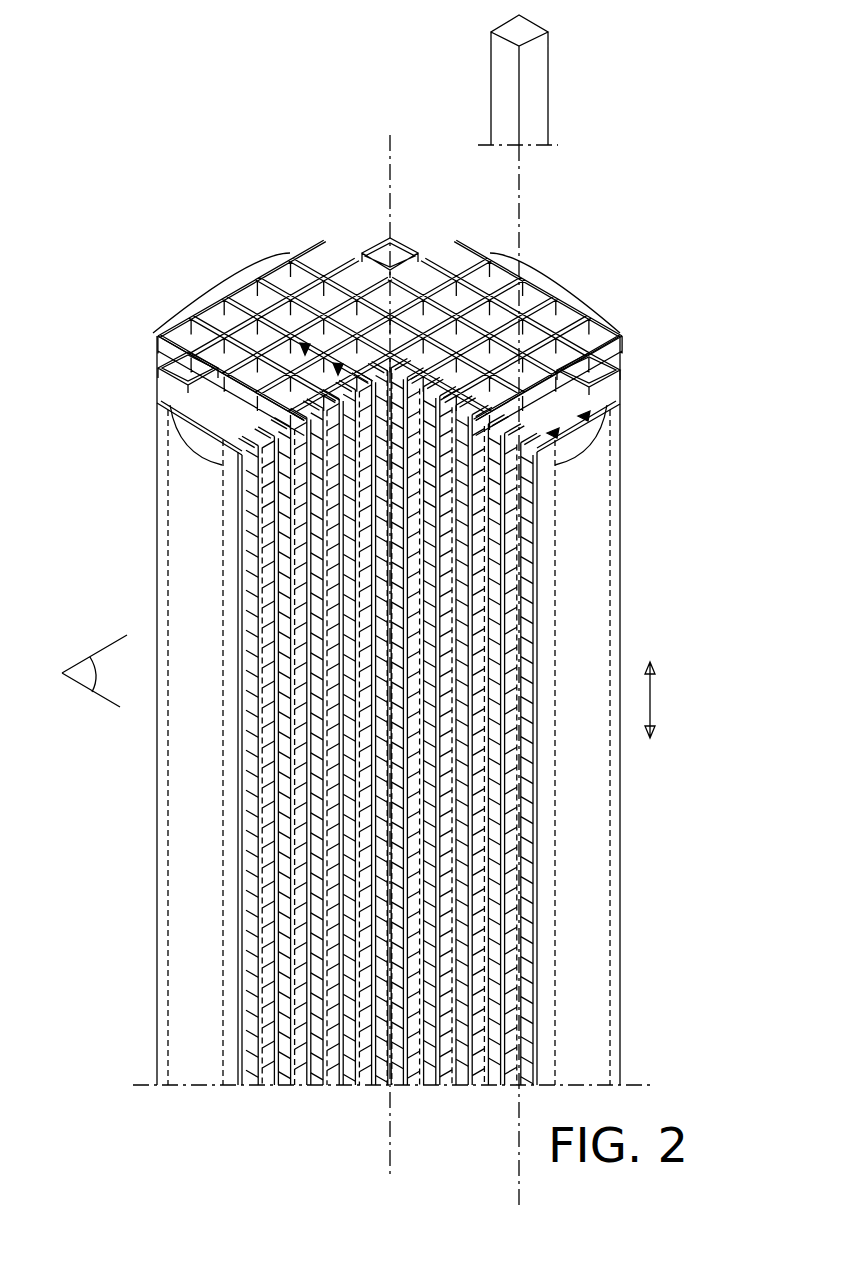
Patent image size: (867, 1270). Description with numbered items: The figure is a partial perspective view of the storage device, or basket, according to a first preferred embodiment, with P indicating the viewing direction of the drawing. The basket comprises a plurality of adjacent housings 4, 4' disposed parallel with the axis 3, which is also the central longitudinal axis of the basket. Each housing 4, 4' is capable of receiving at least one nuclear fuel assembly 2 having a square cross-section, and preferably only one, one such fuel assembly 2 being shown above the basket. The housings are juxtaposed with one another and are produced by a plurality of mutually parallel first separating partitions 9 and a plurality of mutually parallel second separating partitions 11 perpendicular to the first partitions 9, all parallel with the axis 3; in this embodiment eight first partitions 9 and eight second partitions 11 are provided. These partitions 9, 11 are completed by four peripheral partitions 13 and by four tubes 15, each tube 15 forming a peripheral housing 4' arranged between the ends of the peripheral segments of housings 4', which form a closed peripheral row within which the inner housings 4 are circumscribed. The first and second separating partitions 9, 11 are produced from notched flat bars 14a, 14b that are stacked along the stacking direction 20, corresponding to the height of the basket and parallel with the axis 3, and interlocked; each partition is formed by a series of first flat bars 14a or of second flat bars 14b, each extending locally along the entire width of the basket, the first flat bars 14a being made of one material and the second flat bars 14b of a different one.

The nuclear fuel assembly 2 is at (538, 70).
The axis 3 is at (388, 147).
The inner housings 4 is at (390, 296).
The peripheral housings 4' is at (429, 315).
The first separating partitions 9 is at (338, 372).
The second separating partitions 11 is at (590, 416).
The peripheral partitions 13 is at (237, 272).
The first flat bars 14a is at (505, 570).
The second flat bars 14b is at (265, 540).
The tubes 15 is at (397, 247).
The stacking direction 20 is at (656, 700).
The viewing direction P is at (77, 670).